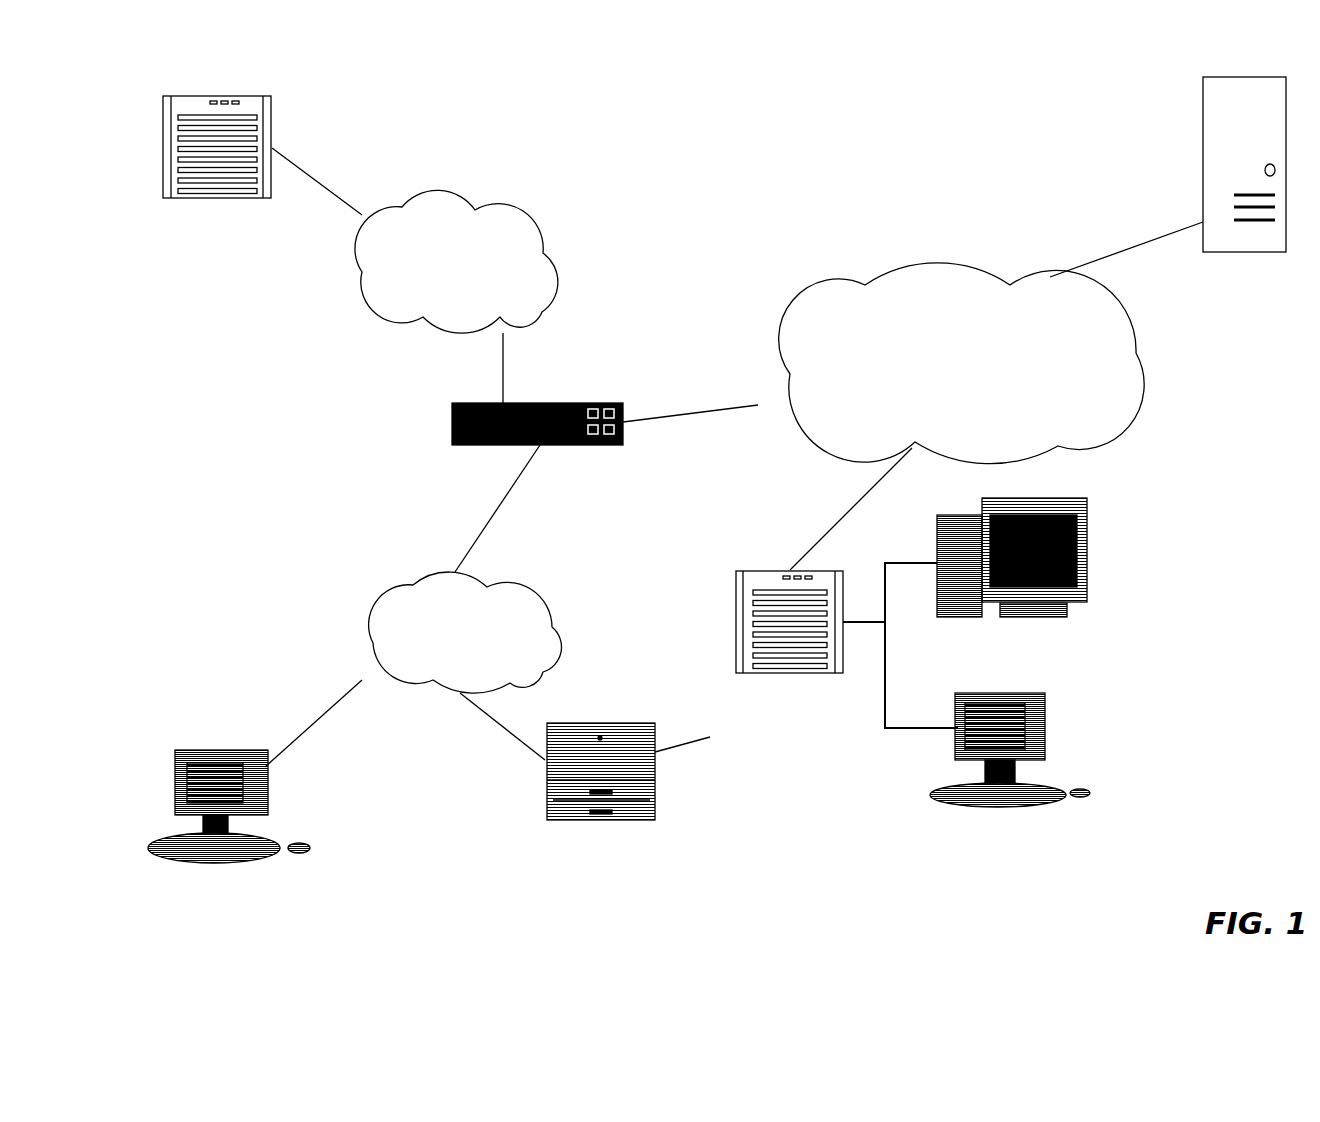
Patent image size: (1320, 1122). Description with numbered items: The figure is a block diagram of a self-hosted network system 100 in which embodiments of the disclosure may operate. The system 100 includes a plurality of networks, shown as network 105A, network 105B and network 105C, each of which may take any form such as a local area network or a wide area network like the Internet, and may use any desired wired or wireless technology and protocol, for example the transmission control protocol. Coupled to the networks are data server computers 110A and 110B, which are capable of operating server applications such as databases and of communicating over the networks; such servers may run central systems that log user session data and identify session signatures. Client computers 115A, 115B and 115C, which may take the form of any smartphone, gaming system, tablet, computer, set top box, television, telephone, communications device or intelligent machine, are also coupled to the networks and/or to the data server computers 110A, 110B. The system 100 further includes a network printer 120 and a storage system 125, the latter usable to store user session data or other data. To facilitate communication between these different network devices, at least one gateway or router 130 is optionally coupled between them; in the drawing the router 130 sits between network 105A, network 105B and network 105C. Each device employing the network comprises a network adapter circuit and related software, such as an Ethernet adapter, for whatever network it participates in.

The self-hosted network system 100 is at (697, 98).
The network 105A is at (538, 212).
The network 105B is at (364, 593).
The network 105C is at (796, 285).
The data server computer 110A is at (271, 130).
The data server computer 110B is at (736, 583).
The client computer 115A is at (243, 860).
The client computer 115B is at (1087, 563).
The client computer 115C is at (1047, 722).
The network printer 120 is at (623, 817).
The storage system 125 is at (1203, 170).
The gateway or router 130 is at (613, 403).